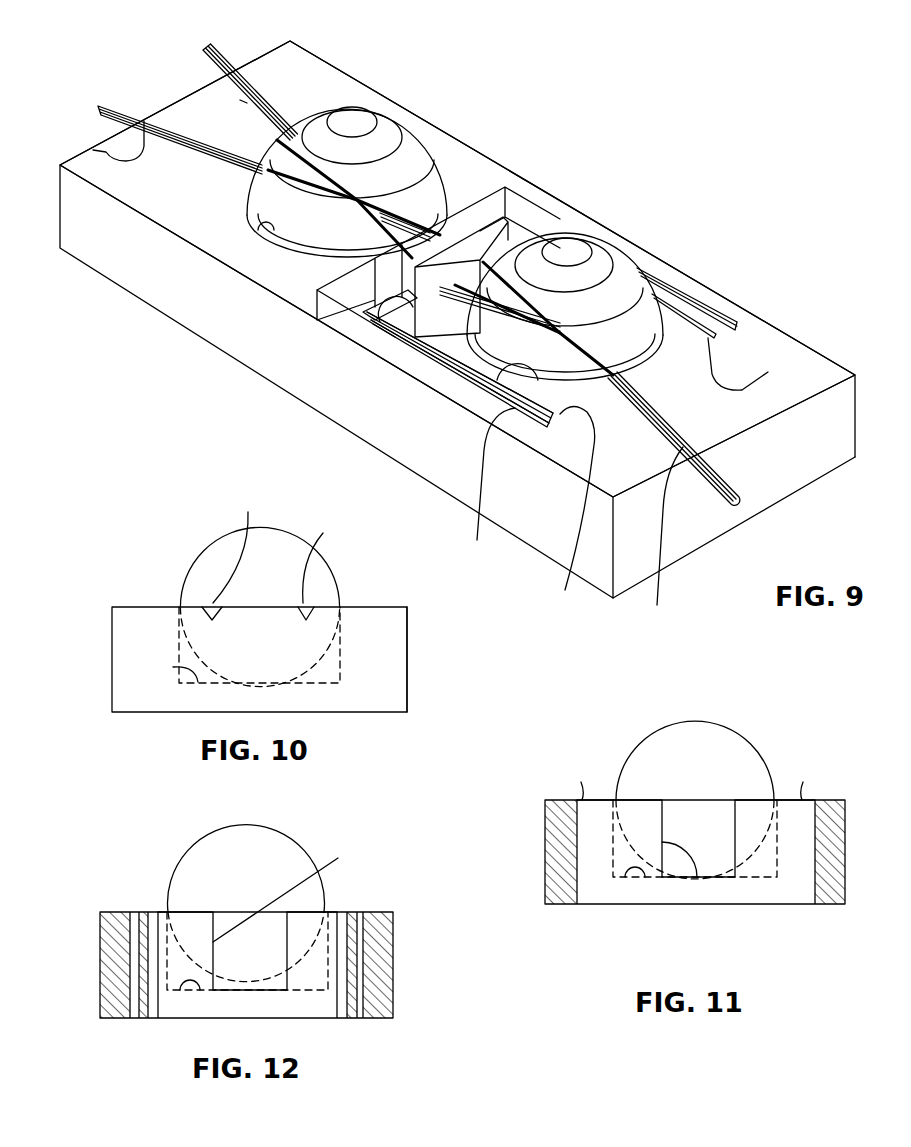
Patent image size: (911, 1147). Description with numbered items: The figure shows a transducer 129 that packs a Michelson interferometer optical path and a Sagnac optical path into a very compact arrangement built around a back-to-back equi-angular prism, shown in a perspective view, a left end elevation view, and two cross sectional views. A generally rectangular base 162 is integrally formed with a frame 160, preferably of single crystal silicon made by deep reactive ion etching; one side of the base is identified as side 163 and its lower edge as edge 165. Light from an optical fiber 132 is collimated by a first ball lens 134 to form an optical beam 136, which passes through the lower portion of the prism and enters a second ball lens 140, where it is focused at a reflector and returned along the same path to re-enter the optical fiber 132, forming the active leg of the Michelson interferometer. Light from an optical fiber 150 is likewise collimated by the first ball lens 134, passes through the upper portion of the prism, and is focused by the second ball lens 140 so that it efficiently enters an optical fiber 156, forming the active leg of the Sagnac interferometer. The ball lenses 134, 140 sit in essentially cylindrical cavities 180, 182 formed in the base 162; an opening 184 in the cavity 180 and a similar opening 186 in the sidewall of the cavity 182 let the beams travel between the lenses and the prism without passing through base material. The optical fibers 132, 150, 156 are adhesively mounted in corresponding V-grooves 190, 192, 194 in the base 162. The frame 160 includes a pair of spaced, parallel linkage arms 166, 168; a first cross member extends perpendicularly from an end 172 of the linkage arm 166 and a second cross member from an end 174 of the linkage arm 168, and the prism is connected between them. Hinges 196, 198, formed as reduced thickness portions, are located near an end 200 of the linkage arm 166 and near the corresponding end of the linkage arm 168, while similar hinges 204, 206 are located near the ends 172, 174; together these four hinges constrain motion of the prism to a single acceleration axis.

In FIG. 9, the transducer 129 is at (738, 189).
In FIG. 9, the optical fiber 132 is at (230, 44).
In FIG. 10, the optical fiber 132 is at (238, 543).
In FIG. 9, the first ball lens 134 is at (367, 108).
In FIG. 10, the first ball lens 134 is at (207, 548).
In FIG. 9, the optical beam 136 is at (455, 215).
In FIG. 9, the second ball lens 140 is at (500, 368).
In FIG. 11, the second ball lens 140 is at (633, 753).
In FIG. 12, the second ball lens 140 is at (175, 872).
In FIG. 9, the optical fiber 150 is at (128, 96).
In FIG. 10, the optical fiber 150 is at (327, 560).
In FIG. 9, the optical fiber 156 is at (661, 539).
In FIG. 9, the frame 160 is at (551, 180).
In FIG. 9, the base 162 is at (97, 274).
In FIG. 10, the base 162 is at (112, 648).
In FIG. 11, the base 162 is at (545, 833).
In FIG. 12, the base 162 is at (395, 965).
In FIG. 10, the side wall of substrate 163 is at (407, 667).
In FIG. 9, the bottom edge of substrate 165 is at (695, 553).
In FIG. 9, the linkage arm 166 is at (685, 300).
In FIG. 9, the linkage arm 168 is at (458, 427).
In FIG. 9, the end of linkage arm 172 is at (560, 204).
In FIG. 9, the end of linkage arm 174 is at (349, 328).
In FIG. 9, the cavity 180 is at (273, 230).
In FIG. 10, the cavity 180 is at (173, 667).
In FIG. 11, the cavity 180 is at (625, 875).
In FIG. 9, the cavity 182 is at (517, 360).
In FIG. 12, the cavity 182 is at (182, 983).
In FIG. 11, the opening 184 is at (687, 877).
In FIG. 12, the opening 186 is at (287, 889).
In FIG. 9, the V-groove 190 is at (243, 100).
In FIG. 10, the V-groove 190 is at (207, 610).
In FIG. 9, the V-groove 192 is at (100, 150).
In FIG. 10, the V-groove 192 is at (307, 607).
In FIG. 9, the V-groove 194 is at (683, 445).
In FIG. 9, the hinge 196 is at (742, 390).
In FIG. 9, the hinge 198 is at (570, 510).
In FIG. 9, the end of linkage arm 200 is at (725, 320).
In FIG. 9, the hinge 204 is at (563, 218).
In FIG. 9, the hinge 206 is at (468, 315).